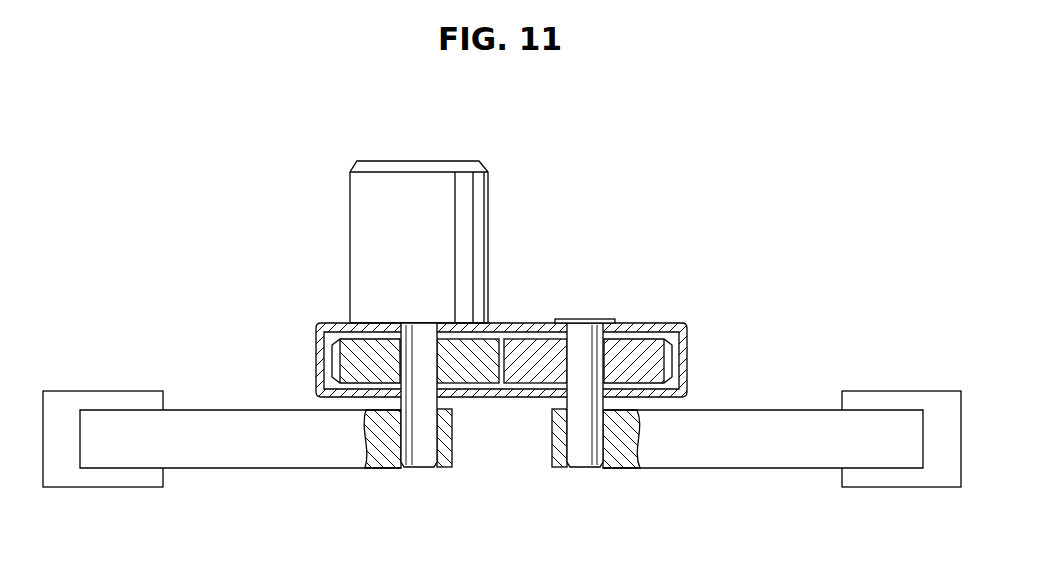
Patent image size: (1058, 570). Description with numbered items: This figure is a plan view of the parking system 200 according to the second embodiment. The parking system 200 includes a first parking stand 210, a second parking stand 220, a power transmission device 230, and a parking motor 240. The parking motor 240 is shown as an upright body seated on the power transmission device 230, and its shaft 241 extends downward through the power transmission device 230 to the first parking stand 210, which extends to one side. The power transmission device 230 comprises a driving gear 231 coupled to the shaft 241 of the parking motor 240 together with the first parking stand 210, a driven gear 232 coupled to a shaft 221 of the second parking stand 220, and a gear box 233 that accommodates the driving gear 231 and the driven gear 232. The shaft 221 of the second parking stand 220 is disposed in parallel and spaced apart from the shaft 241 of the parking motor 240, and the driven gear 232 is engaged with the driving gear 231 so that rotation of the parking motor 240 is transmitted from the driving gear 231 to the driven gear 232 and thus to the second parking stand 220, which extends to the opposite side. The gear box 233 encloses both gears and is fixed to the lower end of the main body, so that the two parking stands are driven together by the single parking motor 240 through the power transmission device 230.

The parking system 200 is at (631, 204).
The first parking stand 210 is at (247, 453).
The second parking stand 220 is at (751, 453).
The shaft 221 is at (583, 453).
The power transmission device 230 is at (503, 318).
The driving gear 231 is at (352, 356).
The driven gear 232 is at (655, 363).
The gear box 233 is at (667, 328).
The parking motor 240 is at (403, 187).
The shaft 241 is at (424, 453).